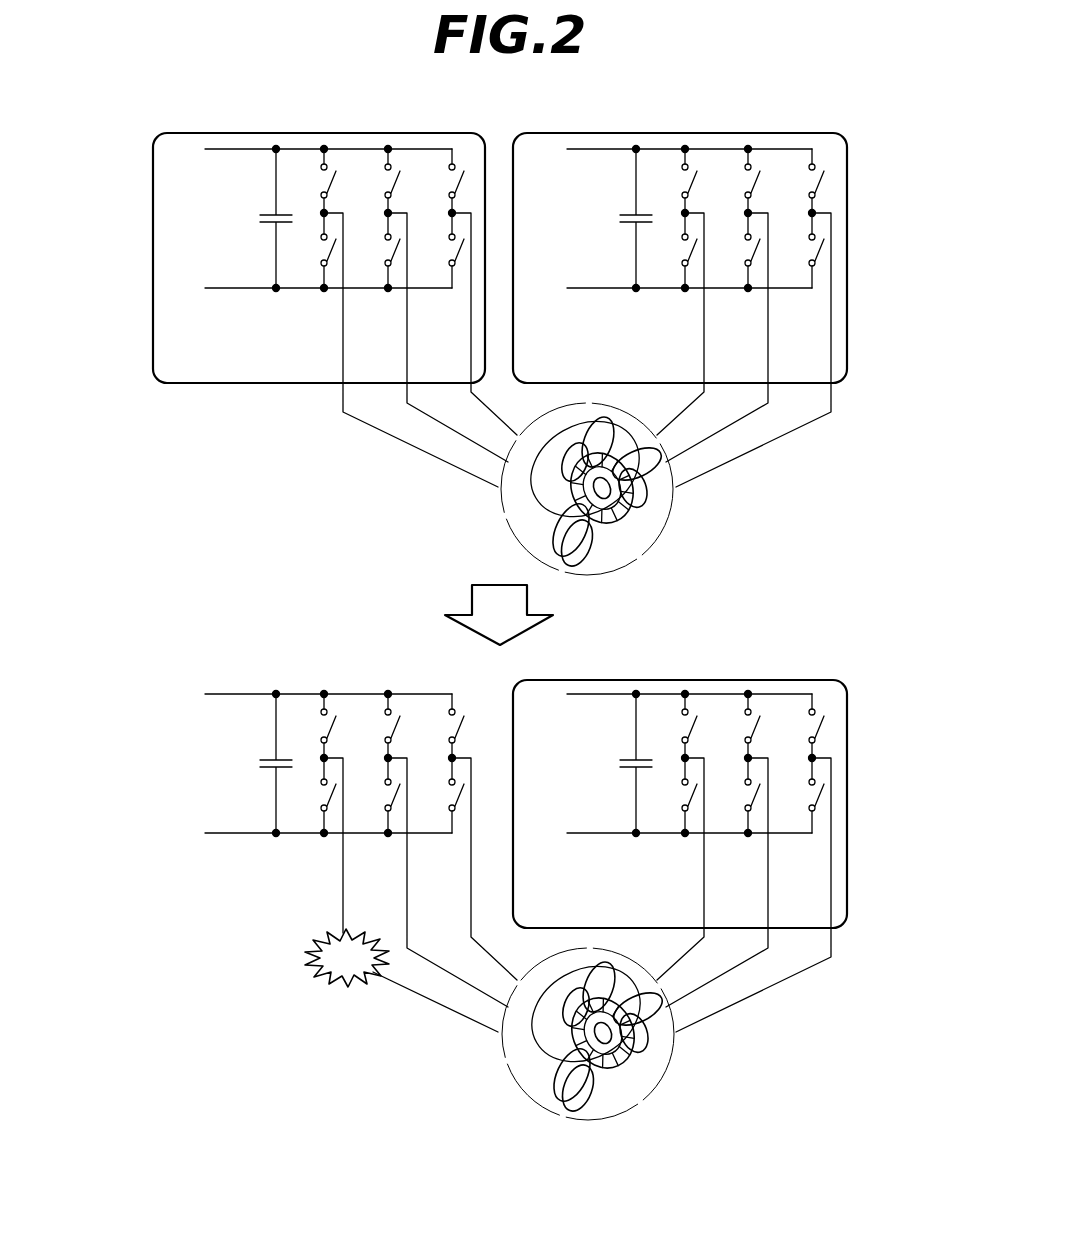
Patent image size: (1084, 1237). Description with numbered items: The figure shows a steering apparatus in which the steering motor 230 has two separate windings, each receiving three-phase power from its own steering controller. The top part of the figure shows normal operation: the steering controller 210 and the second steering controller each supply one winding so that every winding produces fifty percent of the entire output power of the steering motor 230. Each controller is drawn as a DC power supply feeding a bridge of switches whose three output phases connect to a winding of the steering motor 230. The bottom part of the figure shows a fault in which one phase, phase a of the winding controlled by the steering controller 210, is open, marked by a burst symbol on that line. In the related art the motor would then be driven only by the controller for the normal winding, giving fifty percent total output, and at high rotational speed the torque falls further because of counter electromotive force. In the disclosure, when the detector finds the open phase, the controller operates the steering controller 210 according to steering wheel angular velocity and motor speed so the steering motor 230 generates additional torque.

The steering controller 210 is at (318, 133).
The steering motor 230 is at (668, 524).